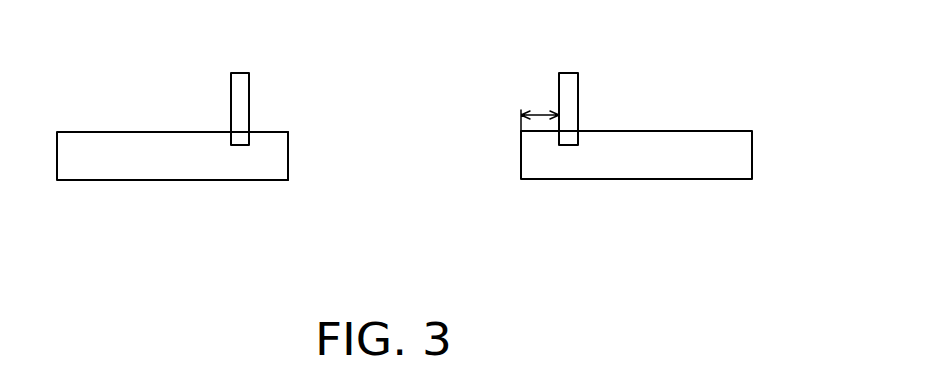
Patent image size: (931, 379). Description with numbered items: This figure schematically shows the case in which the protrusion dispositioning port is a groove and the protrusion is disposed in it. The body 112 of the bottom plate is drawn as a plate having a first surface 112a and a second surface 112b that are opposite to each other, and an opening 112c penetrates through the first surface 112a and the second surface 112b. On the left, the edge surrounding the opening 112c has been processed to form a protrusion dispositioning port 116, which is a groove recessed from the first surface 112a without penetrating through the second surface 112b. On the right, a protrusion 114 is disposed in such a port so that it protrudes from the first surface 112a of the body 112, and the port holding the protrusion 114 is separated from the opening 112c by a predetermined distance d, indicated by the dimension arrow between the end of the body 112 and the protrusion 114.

The body 112 is at (737, 156).
The first surface 112a is at (650, 121).
The second surface 112b is at (649, 190).
The opening 112c is at (299, 160).
The protrusion 114 is at (568, 85).
The protrusion dispositioning port 116 is at (247, 133).
The predetermined distance d is at (542, 110).